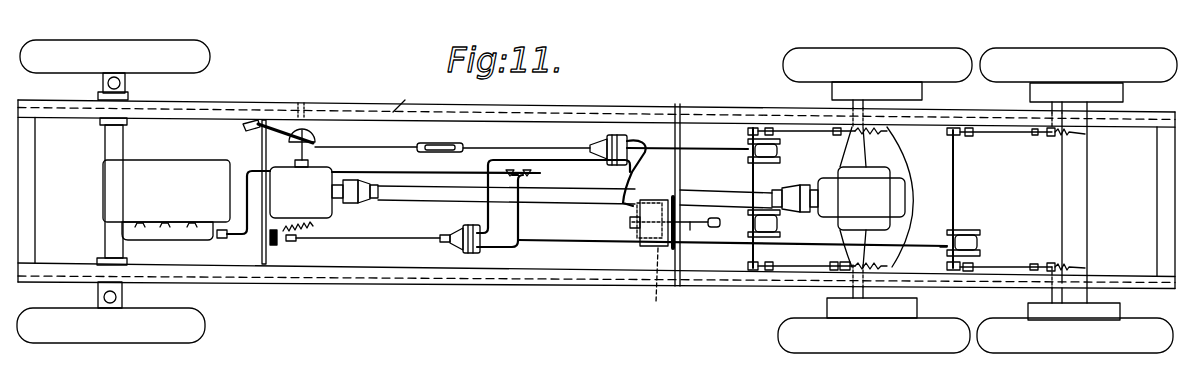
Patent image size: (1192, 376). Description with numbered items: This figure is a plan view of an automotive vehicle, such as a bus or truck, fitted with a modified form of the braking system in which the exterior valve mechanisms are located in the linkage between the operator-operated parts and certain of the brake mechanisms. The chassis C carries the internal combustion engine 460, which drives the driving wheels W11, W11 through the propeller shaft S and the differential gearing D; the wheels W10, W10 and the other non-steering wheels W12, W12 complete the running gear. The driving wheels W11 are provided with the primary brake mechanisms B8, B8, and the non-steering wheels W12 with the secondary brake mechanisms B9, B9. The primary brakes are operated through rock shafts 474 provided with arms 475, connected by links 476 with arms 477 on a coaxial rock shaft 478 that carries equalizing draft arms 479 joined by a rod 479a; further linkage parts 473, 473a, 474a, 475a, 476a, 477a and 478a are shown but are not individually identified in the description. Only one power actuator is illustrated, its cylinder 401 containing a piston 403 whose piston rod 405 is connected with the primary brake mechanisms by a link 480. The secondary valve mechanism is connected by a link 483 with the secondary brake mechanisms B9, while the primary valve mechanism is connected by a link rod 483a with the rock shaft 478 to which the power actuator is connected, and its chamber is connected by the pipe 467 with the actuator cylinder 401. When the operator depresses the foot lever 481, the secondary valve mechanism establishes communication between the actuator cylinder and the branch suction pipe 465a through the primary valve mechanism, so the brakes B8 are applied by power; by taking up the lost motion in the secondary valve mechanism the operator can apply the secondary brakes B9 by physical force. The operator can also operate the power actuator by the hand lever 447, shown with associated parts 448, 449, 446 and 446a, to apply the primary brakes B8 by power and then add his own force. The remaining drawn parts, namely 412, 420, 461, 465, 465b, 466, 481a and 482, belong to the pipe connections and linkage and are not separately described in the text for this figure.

The sheet reference 412 is at (464, 369).
The chassis C is at (596, 189).
The propeller shaft S is at (544, 193).
The differential gearing D is at (861, 198).
The front wheels W10 is at (200, 54).
The driving wheels W11 is at (785, 353).
The non-steering wheels W12 is at (1000, 353).
The primary brake mechanisms B8 is at (827, 306).
The secondary brake mechanisms B9 is at (1028, 306).
The actuator cylinder 401 is at (647, 235).
The piston 403 is at (669, 281).
The piston rod 405 is at (691, 231).
The hydraulic cylinder 420 is at (592, 145).
The control rod 446 is at (367, 147).
The adjustable coupling 446a is at (444, 135).
The hand lever 447 is at (277, 128).
The lever handle 448 is at (250, 120).
The lever quadrant 449 is at (318, 138).
The internal combustion engine 460 is at (166, 191).
The oil pan 461 is at (142, 236).
The fluid pipe 465 is at (399, 171).
The branch suction pipe 465a is at (519, 221).
The pipe connection 465b is at (221, 240).
The pipe 466 is at (487, 212).
The pipe 467 is at (634, 176).
The brake lever 473 is at (888, 135).
The brake lever 473a is at (1068, 133).
The rock shafts 474 is at (855, 108).
The tandem axle 474a is at (1128, 306).
The arms 475 is at (850, 133).
The spring 475a is at (1097, 244).
The links 476 is at (800, 263).
The brake rod 476a is at (1012, 136).
The arms 477 is at (755, 128).
The tie rod 477a is at (963, 135).
The rock shaft 478 is at (752, 176).
The cross shaft 478a is at (954, 176).
The equalizing draft arms 479 is at (778, 142).
The rod 479a is at (777, 162).
The link 480 is at (721, 222).
The foot lever 481 is at (279, 241).
The ratchet 481a is at (315, 225).
The pull rod 482 is at (373, 240).
The link 483 is at (573, 242).
The link rod 483a is at (695, 144).